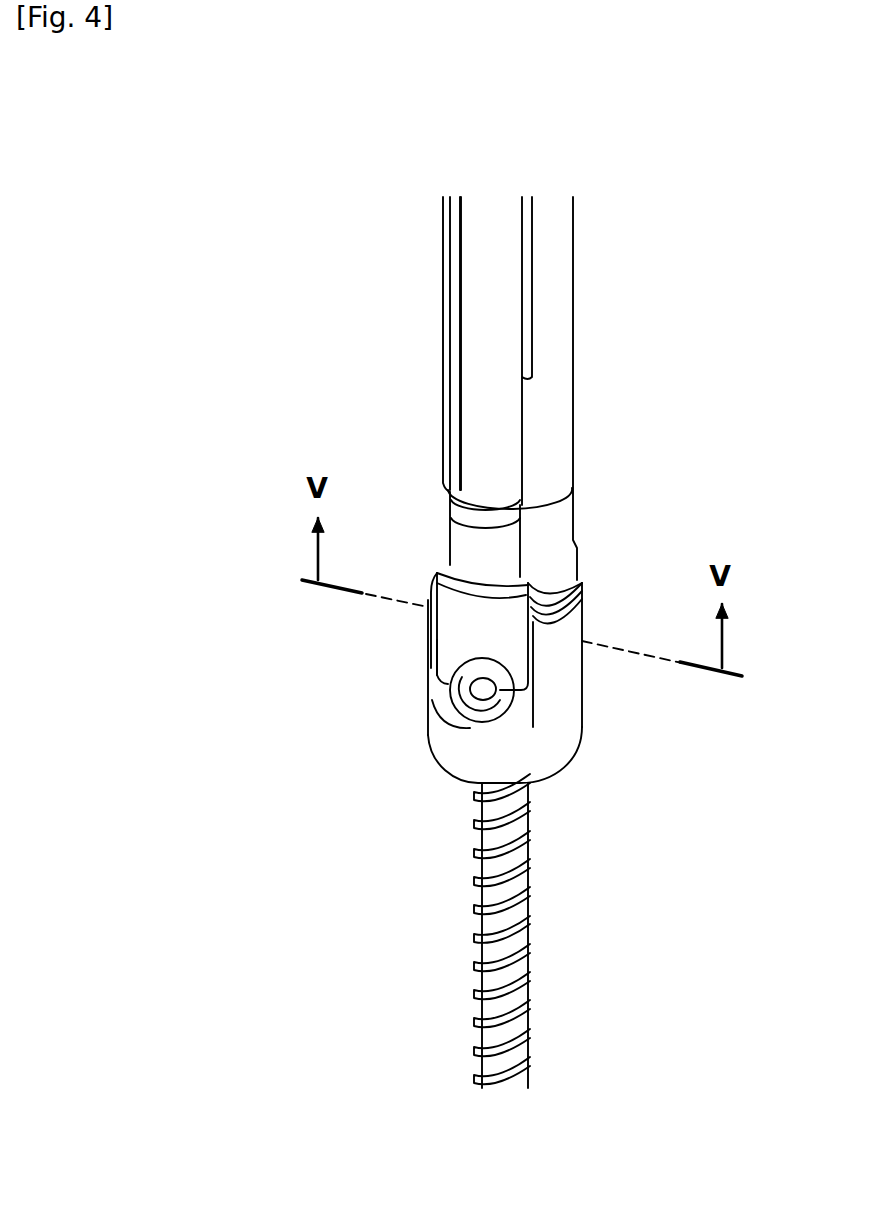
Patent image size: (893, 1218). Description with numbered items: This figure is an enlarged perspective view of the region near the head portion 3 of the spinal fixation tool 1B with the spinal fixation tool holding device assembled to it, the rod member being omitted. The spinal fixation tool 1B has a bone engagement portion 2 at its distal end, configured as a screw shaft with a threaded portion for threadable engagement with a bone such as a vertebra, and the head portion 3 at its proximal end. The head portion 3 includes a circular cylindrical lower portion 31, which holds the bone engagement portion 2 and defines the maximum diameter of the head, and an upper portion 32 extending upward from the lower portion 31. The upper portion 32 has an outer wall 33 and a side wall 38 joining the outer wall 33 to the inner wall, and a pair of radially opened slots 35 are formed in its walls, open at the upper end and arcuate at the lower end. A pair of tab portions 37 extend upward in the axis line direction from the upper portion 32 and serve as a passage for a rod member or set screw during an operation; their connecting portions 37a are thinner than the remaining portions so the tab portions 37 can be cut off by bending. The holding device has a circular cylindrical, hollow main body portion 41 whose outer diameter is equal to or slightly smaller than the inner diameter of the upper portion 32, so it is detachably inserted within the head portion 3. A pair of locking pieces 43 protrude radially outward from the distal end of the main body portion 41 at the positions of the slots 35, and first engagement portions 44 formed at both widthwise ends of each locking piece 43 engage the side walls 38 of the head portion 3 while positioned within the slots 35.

The spinal fixation tool 1B is at (225, 568).
The bone engagement portion 2 is at (528, 960).
The head portion 3 is at (604, 595).
The lower portion 31 is at (447, 812).
The upper portion 32 is at (631, 685).
The outer wall 33 is at (437, 621).
The slots 35 is at (432, 700).
The tab portions 37 is at (440, 440).
The connecting portions 37a is at (563, 592).
The side wall 38 is at (424, 686).
The main body portion 41 is at (483, 420).
The locking pieces 43 is at (432, 653).
The first engagement portions 44 is at (421, 658).